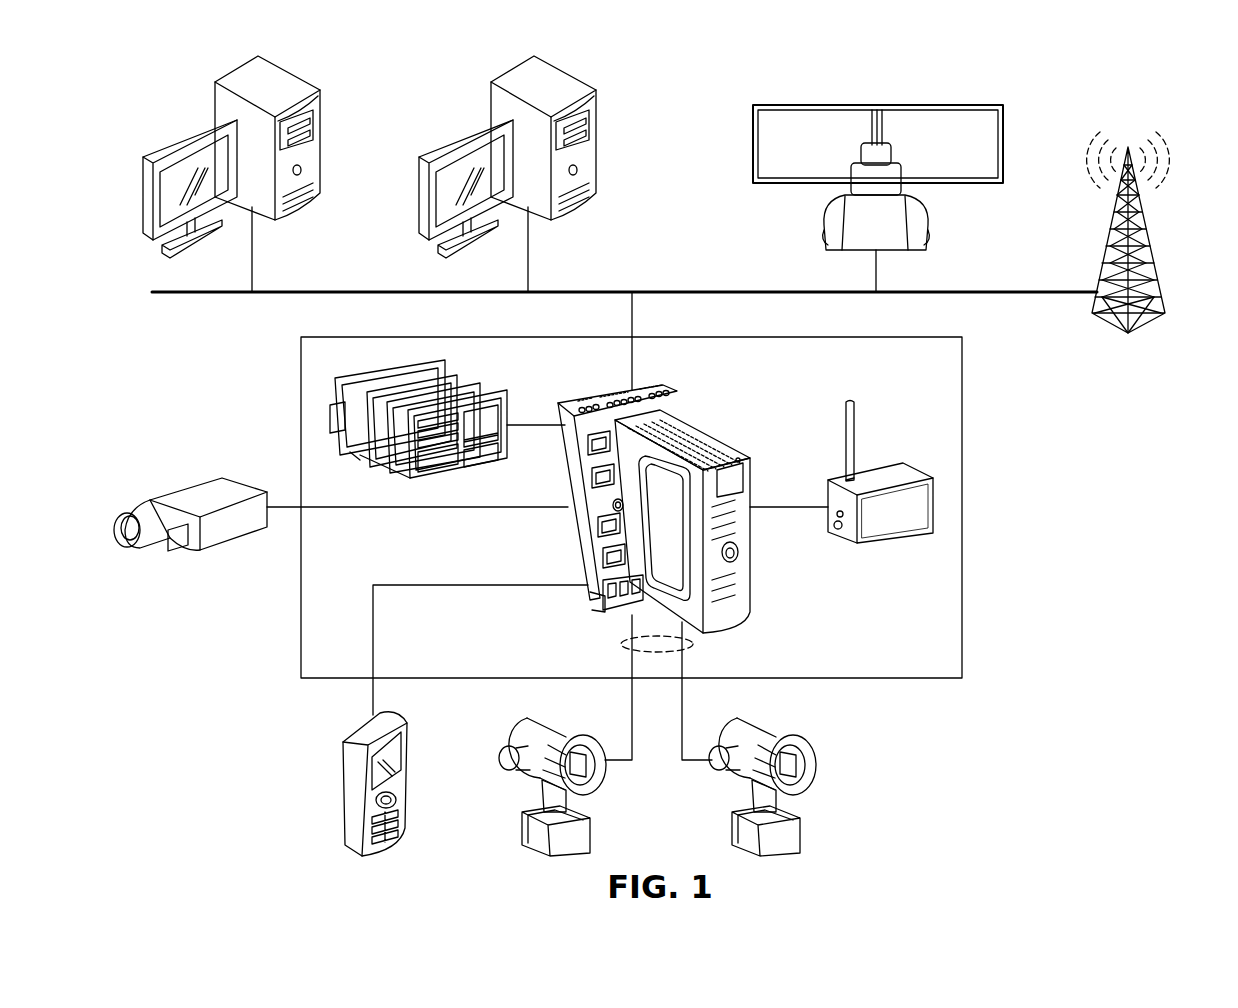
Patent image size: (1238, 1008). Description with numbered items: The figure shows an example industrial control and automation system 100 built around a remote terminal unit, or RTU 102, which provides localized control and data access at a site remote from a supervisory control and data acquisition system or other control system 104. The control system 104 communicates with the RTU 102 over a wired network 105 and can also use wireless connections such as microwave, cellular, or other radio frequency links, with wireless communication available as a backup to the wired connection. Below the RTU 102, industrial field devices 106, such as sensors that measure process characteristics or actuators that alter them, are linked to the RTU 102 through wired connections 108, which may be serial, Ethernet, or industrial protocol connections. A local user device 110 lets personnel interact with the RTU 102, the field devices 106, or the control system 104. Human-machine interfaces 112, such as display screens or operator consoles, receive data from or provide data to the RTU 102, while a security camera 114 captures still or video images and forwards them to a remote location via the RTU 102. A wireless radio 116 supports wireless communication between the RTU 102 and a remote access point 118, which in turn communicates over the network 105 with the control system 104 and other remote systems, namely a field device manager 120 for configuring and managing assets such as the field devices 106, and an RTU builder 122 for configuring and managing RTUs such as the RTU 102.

The industrial control and automation system 100 is at (1104, 629).
The remote terminal unit 102 is at (575, 543).
The control system 104 is at (912, 105).
The wired network 105 is at (706, 291).
The industrial field devices 106 is at (492, 830).
The wired connections 108 is at (621, 643).
The local user device 110 is at (343, 793).
The human-machine interfaces 112 is at (523, 379).
The security cameras 114 is at (198, 490).
The wireless radio 116 is at (905, 530).
The remote access point 118 is at (1150, 238).
The field device manager 120 is at (178, 105).
The RTU builder 122 is at (453, 105).